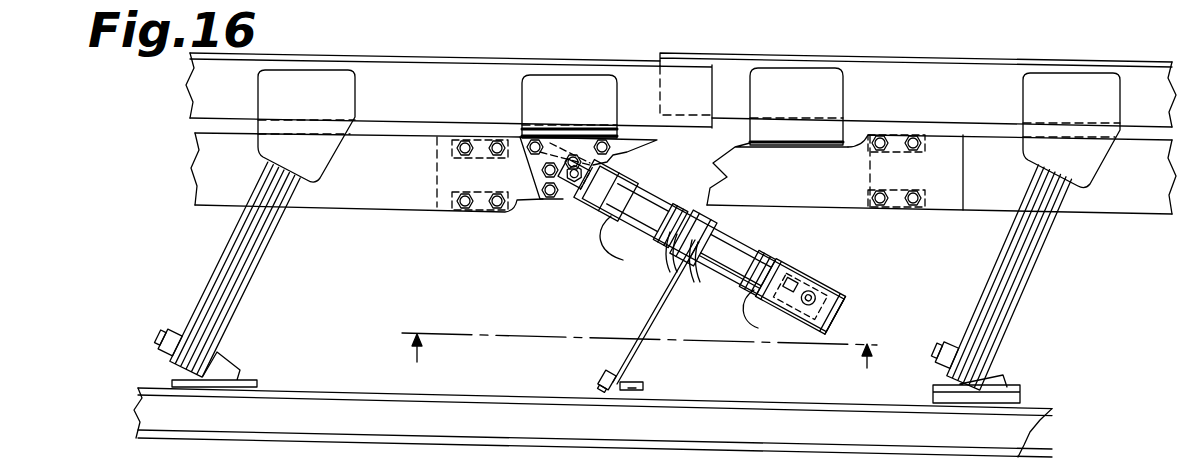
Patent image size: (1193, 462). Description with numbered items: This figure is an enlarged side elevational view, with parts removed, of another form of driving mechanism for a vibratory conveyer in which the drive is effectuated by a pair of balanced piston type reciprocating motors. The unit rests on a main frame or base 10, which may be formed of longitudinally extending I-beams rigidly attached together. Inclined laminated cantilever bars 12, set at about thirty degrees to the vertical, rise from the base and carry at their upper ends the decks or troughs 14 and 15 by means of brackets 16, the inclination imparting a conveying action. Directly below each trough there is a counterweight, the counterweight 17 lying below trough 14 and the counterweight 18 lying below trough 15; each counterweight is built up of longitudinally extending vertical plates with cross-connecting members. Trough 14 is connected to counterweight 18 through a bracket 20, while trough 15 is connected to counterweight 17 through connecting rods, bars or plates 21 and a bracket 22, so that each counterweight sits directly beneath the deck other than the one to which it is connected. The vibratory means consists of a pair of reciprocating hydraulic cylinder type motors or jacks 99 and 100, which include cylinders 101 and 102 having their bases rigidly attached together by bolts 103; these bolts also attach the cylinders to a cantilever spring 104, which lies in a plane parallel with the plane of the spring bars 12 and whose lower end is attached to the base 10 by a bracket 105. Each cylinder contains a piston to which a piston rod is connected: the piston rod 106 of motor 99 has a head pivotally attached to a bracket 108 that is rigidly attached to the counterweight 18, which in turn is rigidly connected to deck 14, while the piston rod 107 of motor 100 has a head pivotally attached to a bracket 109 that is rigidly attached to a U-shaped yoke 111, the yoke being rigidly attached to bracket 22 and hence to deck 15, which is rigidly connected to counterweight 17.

The main frame or base 10 is at (318, 409).
The outside cantilever bars 12 is at (237, 290).
The deck or trough 14 is at (935, 77).
The deck or trough 15 is at (443, 90).
The brackets 16 is at (689, 129).
The counterweight or counterbalance 17 is at (985, 202).
The counterweight or counterbalance 18 is at (387, 202).
The bracket 20 is at (796, 106).
The connecting rods, bars or plates 21 is at (777, 174).
The bracket 22 is at (569, 106).
The reciprocating hydraulic cylinder type motor 99 is at (634, 240).
The reciprocating hydraulic cylinder type motor 100 is at (738, 243).
The cylinder 101 is at (693, 238).
The cylinder 102 is at (729, 270).
The bolts 103 is at (670, 225).
The cantilever spring 104 is at (637, 350).
The bracket 105 is at (620, 393).
The piston rod 106 is at (606, 191).
The piston rod 107 is at (801, 297).
The bracket 108 is at (577, 177).
The bracket 109 is at (800, 296).
The U-shaped yoke 111 is at (833, 314).